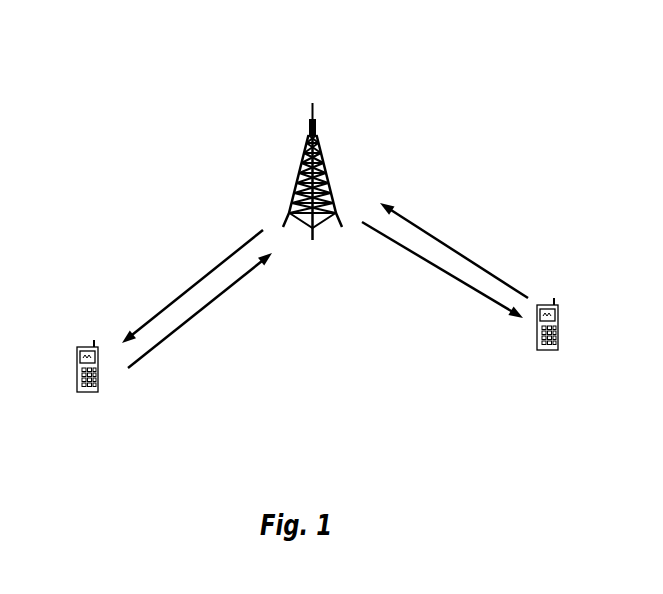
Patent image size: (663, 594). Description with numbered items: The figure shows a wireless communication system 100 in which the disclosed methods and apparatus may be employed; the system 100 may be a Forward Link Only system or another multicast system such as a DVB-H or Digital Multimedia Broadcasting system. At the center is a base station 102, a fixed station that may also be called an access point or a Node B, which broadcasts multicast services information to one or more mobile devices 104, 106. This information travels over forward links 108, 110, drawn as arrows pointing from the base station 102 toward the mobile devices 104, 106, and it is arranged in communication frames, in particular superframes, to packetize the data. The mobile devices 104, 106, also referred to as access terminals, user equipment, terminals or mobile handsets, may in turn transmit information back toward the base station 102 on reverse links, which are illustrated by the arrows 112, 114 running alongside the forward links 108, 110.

The wireless communication system 100 is at (95, 45).
The base station 102 is at (325, 168).
The mobile device 104 is at (537, 337).
The mobile device 106 is at (77, 377).
The forward link 108 is at (442, 272).
The forward link 110 is at (165, 307).
The reverse link 112 is at (468, 258).
The reverse link 114 is at (210, 303).